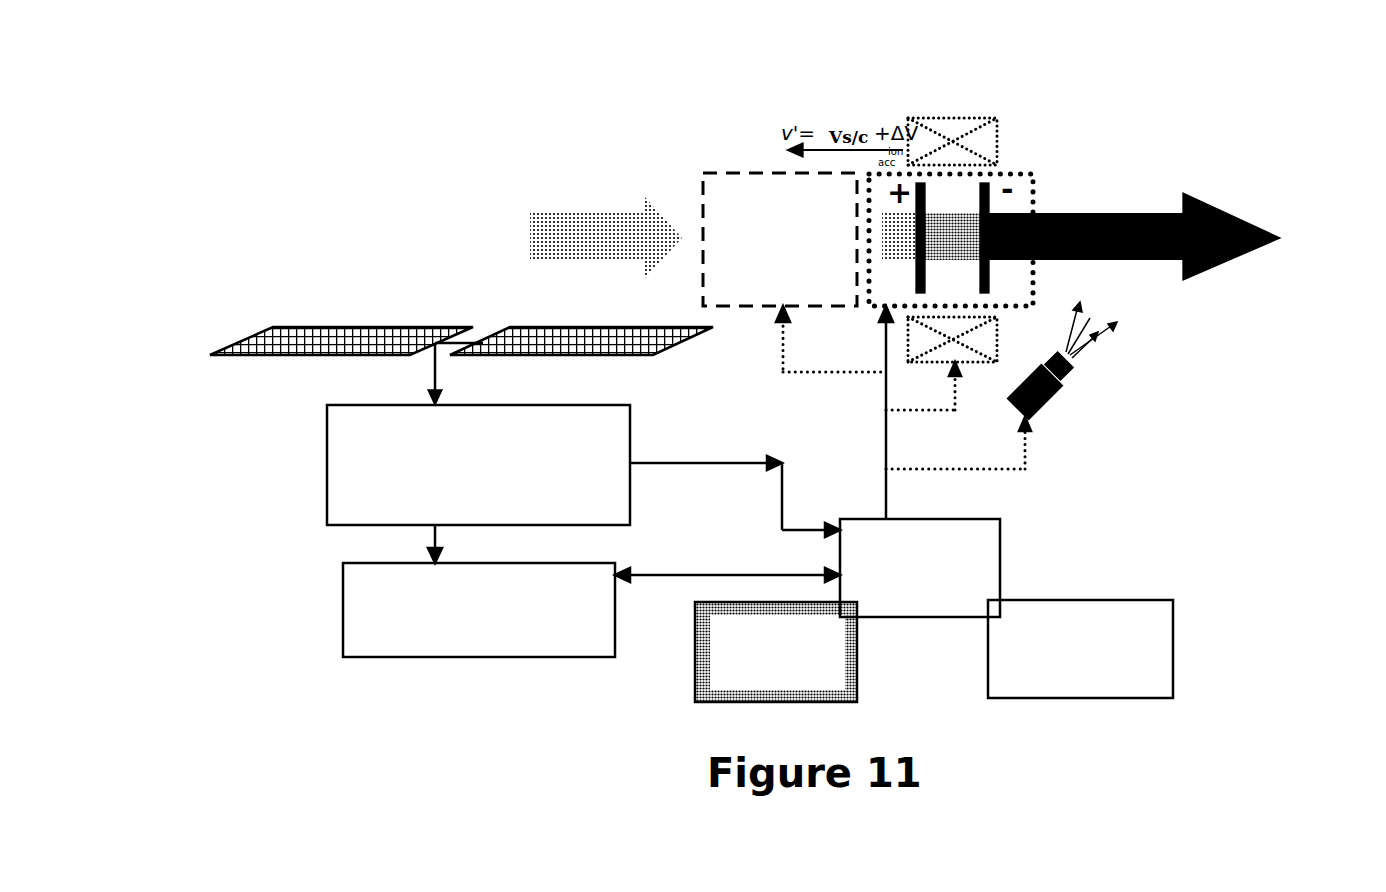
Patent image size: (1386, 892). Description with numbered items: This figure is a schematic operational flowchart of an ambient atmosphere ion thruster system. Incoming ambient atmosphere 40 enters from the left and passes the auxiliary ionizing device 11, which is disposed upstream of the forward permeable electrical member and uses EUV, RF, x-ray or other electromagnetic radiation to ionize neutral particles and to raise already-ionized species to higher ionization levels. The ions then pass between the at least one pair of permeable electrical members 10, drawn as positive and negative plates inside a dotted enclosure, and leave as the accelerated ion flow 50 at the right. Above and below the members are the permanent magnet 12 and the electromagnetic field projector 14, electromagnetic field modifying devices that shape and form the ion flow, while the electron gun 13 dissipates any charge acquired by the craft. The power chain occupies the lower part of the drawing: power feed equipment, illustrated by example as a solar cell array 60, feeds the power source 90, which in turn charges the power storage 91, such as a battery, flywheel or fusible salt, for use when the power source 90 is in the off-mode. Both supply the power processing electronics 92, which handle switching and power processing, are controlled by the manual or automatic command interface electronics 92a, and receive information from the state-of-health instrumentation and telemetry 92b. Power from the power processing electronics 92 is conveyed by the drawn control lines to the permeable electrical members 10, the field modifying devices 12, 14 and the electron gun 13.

The permeable electrical member 10 is at (993, 205).
The auxiliary ionizing device 11 is at (770, 163).
The permanent magnet 12 is at (921, 107).
The electron gun 13 is at (1060, 396).
The electromagnetic field projector 14 is at (982, 347).
The propellant flow 40 is at (575, 237).
The ion beam 50 is at (1106, 236).
The solar array 60 is at (343, 325).
The power source 90 is at (327, 421).
The power storage 91 is at (343, 580).
The power processing electronics 92 is at (1000, 553).
The command interface electronics 92a is at (695, 650).
The state-of-health instrumentation and telemetry 92b is at (1173, 665).